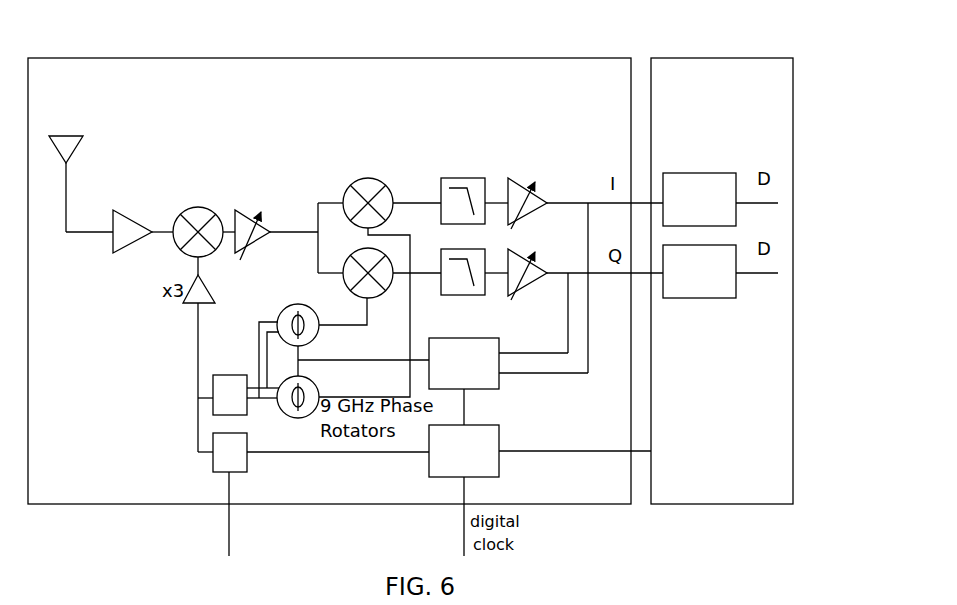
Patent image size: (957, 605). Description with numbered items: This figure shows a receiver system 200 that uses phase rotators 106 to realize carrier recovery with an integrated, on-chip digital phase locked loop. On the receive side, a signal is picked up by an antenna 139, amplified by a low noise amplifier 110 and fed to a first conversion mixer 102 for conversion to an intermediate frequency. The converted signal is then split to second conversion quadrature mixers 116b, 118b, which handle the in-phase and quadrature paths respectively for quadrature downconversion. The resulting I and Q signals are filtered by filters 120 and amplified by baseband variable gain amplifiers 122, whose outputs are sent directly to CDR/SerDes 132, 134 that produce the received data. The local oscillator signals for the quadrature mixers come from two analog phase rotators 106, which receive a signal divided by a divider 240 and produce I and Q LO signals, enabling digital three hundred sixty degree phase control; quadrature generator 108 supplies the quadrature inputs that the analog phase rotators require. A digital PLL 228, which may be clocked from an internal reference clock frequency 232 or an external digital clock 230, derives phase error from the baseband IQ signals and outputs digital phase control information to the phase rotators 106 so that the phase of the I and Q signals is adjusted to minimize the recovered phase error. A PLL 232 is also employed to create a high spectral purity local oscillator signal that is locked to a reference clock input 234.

The receiver system 200 is at (244, 38).
The antenna 139 is at (67, 203).
The low noise amplifier 110 is at (126, 208).
The first conversion mixer 102 is at (191, 208).
The baseband variable gain amplifier 122 is at (244, 210).
The second conversion quadrature mixer 116b is at (365, 178).
The second conversion quadrature mixer 118b is at (393, 294).
The filter 120 is at (448, 178).
The CDR/SerDes 132 is at (720, 173).
The CDR/SerDes 134 is at (685, 298).
The analog phase rotator 106 is at (296, 304).
The quadrature generator 108 is at (302, 418).
The divider 240 is at (220, 375).
The digital PLL 228 is at (499, 380).
The external digital clock 230 is at (499, 465).
The PLL 232 is at (247, 463).
The reference clock input 234 is at (302, 521).